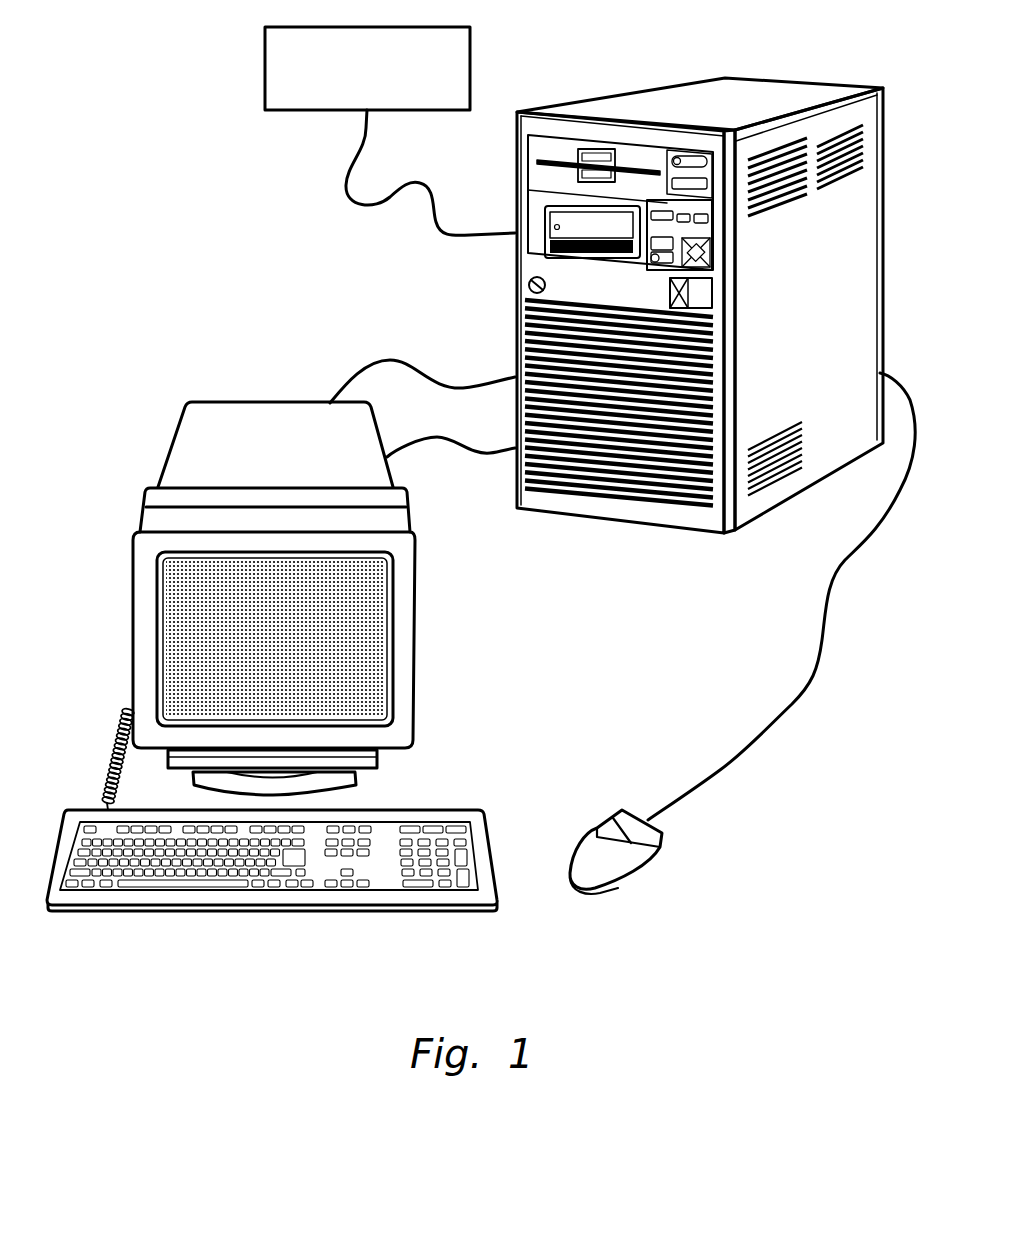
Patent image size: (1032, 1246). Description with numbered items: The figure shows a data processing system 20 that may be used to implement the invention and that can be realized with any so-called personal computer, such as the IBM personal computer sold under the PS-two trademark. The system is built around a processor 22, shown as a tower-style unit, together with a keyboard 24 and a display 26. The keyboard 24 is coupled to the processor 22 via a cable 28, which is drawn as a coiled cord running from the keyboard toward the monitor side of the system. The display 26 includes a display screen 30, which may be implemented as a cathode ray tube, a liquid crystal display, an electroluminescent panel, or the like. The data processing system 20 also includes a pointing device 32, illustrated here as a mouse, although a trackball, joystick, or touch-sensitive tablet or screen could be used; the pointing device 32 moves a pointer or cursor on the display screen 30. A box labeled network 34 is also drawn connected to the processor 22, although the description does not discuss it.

The data processing system 20 is at (280, 238).
The processor 22 is at (515, 326).
The keyboard 24 is at (300, 903).
The display 26 is at (324, 565).
The cable 28 is at (98, 732).
The display screen 30 is at (360, 615).
The pointing device 32 is at (622, 868).
The network 34 is at (470, 75).